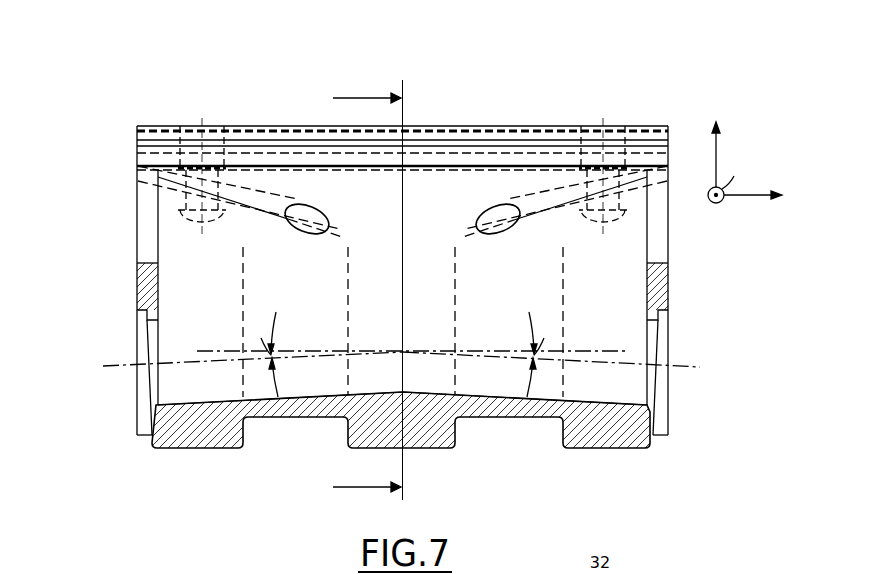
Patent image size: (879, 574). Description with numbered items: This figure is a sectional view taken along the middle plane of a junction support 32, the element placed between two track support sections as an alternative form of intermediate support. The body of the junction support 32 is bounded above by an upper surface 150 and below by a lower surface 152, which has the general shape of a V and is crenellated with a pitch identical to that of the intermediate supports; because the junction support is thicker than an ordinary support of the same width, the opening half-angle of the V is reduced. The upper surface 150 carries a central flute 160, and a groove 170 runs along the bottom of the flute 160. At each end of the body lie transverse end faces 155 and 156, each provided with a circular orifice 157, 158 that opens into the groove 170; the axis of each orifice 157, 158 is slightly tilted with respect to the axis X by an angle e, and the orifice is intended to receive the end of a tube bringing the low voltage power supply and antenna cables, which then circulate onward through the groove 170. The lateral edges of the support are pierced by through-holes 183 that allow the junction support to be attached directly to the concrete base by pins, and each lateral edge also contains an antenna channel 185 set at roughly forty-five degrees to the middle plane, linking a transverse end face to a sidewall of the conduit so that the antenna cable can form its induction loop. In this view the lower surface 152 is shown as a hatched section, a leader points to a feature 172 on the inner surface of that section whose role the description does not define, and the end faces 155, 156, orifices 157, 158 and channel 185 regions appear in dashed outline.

The junction support 32 is at (254, 93).
The upper surface 150 is at (274, 122).
The lower surface 152 is at (192, 456).
The transverse end face 155 is at (130, 292).
The transverse end face 156 is at (677, 292).
The circular orifice 157 is at (154, 387).
The circular orifice 158 is at (662, 352).
The central flute 160 is at (510, 155).
The groove 170 is at (424, 310).
The inner surface of lower plate 172 is at (490, 393).
The through-hole 183 is at (201, 143).
The antenna channel 185 is at (151, 166).